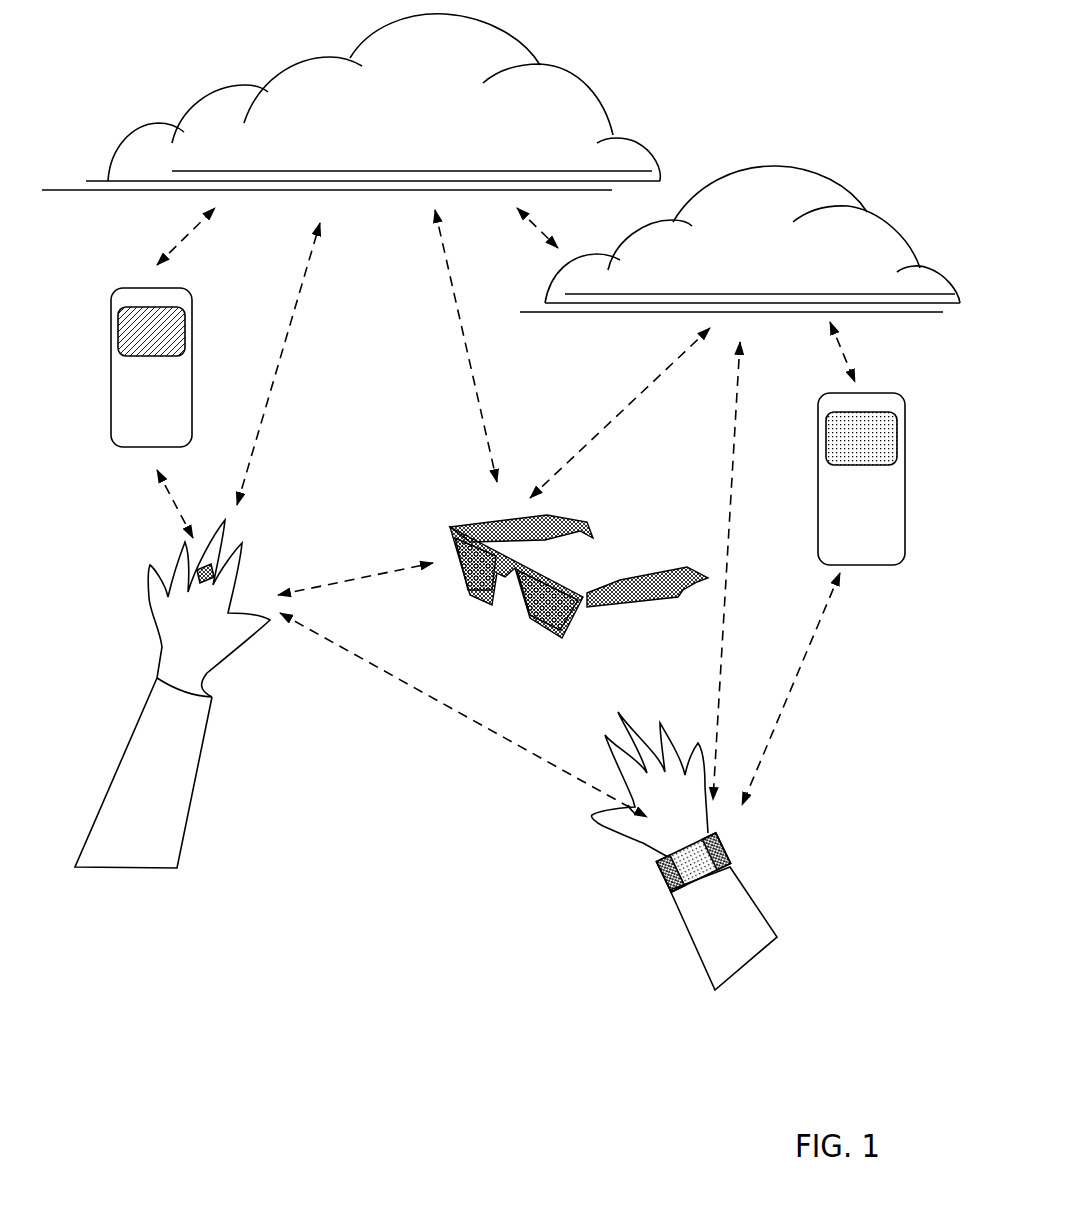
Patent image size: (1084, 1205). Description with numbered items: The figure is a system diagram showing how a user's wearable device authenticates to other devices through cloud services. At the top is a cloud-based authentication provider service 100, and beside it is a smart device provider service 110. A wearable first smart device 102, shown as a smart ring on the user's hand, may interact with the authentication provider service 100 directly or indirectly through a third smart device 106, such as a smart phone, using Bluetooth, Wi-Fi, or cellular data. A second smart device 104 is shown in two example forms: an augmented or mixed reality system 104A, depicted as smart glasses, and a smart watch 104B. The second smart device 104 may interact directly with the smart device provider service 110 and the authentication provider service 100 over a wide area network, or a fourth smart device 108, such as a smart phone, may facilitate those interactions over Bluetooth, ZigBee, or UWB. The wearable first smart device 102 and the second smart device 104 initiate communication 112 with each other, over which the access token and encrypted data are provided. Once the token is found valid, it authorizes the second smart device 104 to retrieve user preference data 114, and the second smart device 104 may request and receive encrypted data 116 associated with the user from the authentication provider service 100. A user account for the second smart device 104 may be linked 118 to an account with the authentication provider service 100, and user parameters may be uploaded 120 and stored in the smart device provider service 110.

The authentication provider service 100 is at (472, 153).
The smart device provider service 110 is at (825, 277).
The wearable first smart device 102 is at (172, 694).
The second smart device 104 is at (426, 795).
The augmented or mixed reality system 104A is at (579, 576).
The smart watch 104B is at (695, 851).
The third smart device 106 is at (151, 367).
The fourth smart device 108 is at (861, 479).
The communication 112 is at (320, 574).
The retrieval of user preference data 114 is at (604, 387).
The encrypted data 116 is at (460, 317).
The linking 118 is at (540, 240).
The uploading of user parameters 120 is at (848, 364).